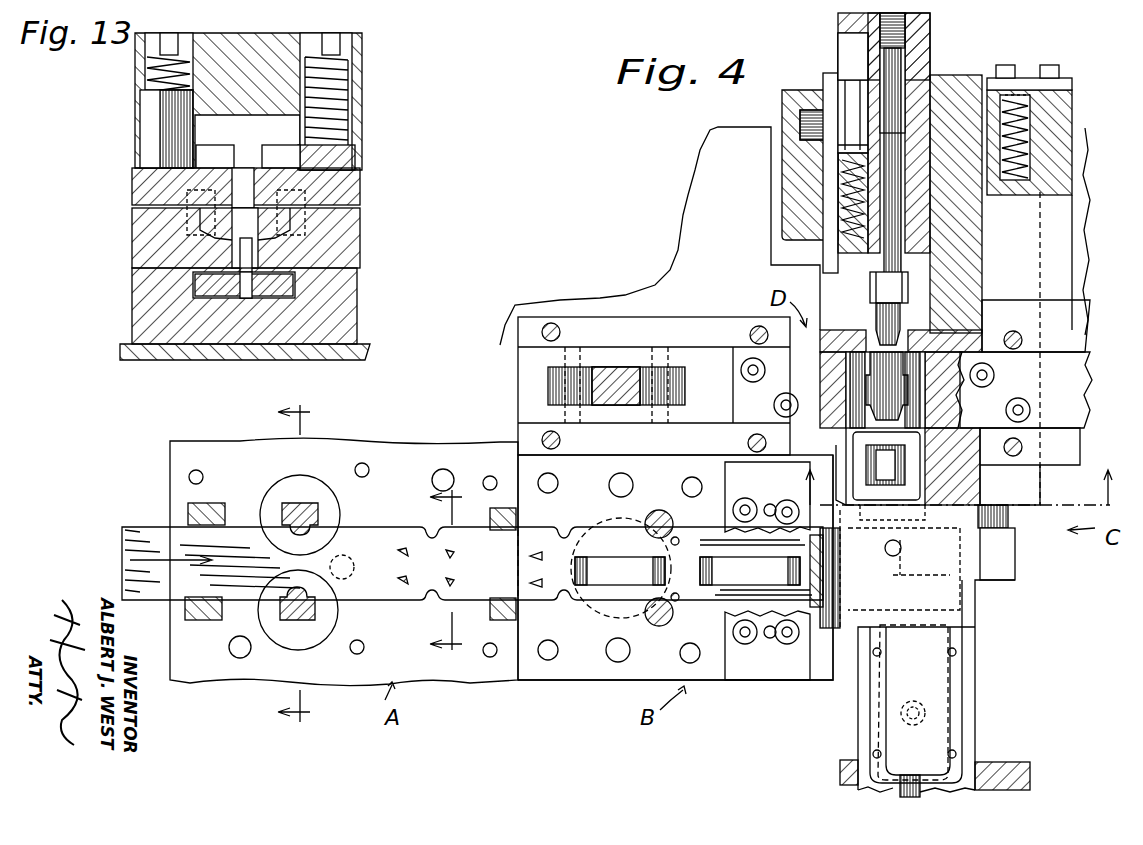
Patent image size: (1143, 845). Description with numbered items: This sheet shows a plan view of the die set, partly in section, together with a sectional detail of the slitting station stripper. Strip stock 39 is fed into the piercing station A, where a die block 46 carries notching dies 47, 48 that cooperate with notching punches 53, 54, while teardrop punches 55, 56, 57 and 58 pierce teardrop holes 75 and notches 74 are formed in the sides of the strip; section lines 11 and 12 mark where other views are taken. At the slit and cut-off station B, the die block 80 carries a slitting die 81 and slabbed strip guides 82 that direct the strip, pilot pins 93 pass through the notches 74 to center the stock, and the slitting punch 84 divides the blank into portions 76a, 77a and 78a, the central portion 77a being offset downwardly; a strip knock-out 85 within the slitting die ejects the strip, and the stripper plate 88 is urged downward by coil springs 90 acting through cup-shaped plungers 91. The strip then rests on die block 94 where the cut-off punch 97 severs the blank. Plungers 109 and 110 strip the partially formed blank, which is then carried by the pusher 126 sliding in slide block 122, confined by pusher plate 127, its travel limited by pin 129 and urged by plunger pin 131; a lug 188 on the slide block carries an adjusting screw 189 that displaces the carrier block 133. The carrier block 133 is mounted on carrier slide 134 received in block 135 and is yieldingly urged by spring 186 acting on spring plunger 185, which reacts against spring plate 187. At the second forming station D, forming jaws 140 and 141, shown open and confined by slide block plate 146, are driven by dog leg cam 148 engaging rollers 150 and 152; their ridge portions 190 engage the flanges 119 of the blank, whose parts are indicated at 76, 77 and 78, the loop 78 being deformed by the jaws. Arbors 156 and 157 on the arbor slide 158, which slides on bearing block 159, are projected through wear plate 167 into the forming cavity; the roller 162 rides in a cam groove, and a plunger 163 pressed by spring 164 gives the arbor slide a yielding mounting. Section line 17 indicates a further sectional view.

In FIG. 13, the coil springs 90 is at (350, 80).
In FIG. 13, the cup-shaped plungers 91 is at (152, 150).
In FIG. 13, the central portion of blank 77a is at (215, 156).
In FIG. 4, the central portion of blank 77a is at (620, 571).
In FIG. 13, the slitting punch 84 is at (281, 156).
In FIG. 13, the stripper plate 88 is at (356, 185).
In FIG. 13, the strip guides 82 is at (190, 198).
In FIG. 4, the strip guides 82 is at (680, 519).
In FIG. 13, the portion of blank 78a is at (212, 220).
In FIG. 4, the portion of blank 78a is at (619, 593).
In FIG. 13, the portion of blank 76a is at (268, 220).
In FIG. 4, the portion of blank 76a is at (621, 568).
In FIG. 13, the slitting die 81 is at (252, 255).
In FIG. 13, the die block 80 is at (352, 285).
In FIG. 13, the strip knock-out 85 is at (195, 287).
In FIG. 4, the arbor slide 158 is at (930, 30).
In FIG. 4, the arbor slide bearing block 159 is at (937, 76).
In FIG. 4, the spring 164 is at (830, 76).
In FIG. 4, the roller 162 is at (782, 112).
In FIG. 4, the plunger 163 is at (843, 158).
In FIG. 4, the spring 186 is at (1013, 93).
In FIG. 4, the spring plate 187 is at (1074, 80).
In FIG. 4, the spring plunger 185 is at (1072, 96).
In FIG. 4, the block 135 is at (1072, 112).
In FIG. 4, the carrier slide 134 is at (1040, 255).
In FIG. 4, the upper arbor 156 is at (870, 280).
In FIG. 4, the arbor 157 is at (878, 335).
In FIG. 4, the wear plate 167 is at (962, 332).
In FIG. 4, the left forming jaw 140 is at (755, 345).
In FIG. 4, the dog leg cam 148 is at (612, 368).
In FIG. 4, the roller 152 is at (660, 372).
In FIG. 4, the slide block plate 146 is at (530, 360).
In FIG. 4, the roller 150 is at (548, 383).
In FIG. 4, the ridge portions 190 is at (855, 362).
In FIG. 4, the right forming jaw 141 is at (1010, 390).
In FIG. 4, the carrier block 133 is at (958, 483).
In FIG. 4, the die member 76 is at (870, 437).
In FIG. 4, the die insert 77 is at (880, 465).
In FIG. 4, the loop 78 is at (876, 492).
In FIG. 4, the flanges 119 is at (908, 510).
In FIG. 4, the section line 17 is at (962, 487).
In FIG. 4, the adjusting screw 189 is at (1010, 519).
In FIG. 4, the lug 188 is at (1015, 540).
In FIG. 4, the slide block 122 is at (975, 626).
In FIG. 4, the pusher 126 is at (938, 590).
In FIG. 4, the plunger 110 is at (925, 548).
In FIG. 4, the plunger 109 is at (913, 702).
In FIG. 4, the pusher plate 127 is at (935, 686).
In FIG. 4, the pin 129 is at (926, 713).
In FIG. 4, the plunger pin 131 is at (980, 762).
In FIG. 4, the cut-off punch 97 is at (830, 595).
In FIG. 4, the die block 94 is at (835, 676).
In FIG. 4, the die block 46 is at (205, 445).
In FIG. 4, the strip stock 39 is at (135, 526).
In FIG. 4, the notching punch 53 is at (282, 512).
In FIG. 4, the notching punch 54 is at (280, 608).
In FIG. 4, the notching die 47 is at (318, 490).
In FIG. 4, the notching die 48 is at (322, 612).
In FIG. 4, the section line 12 is at (307, 562).
In FIG. 4, the section line 11 is at (452, 573).
In FIG. 4, the teardrop punch 55 is at (398, 550).
In FIG. 4, the teardrop punch 56 is at (398, 578).
In FIG. 4, the teardrop punch 57 is at (456, 553).
In FIG. 4, the teardrop punch 58 is at (456, 580).
In FIG. 4, the notches 74 is at (428, 600).
In FIG. 4, the teardrop holes 75 is at (540, 580).
In FIG. 4, the pilot pins 93 is at (677, 569).